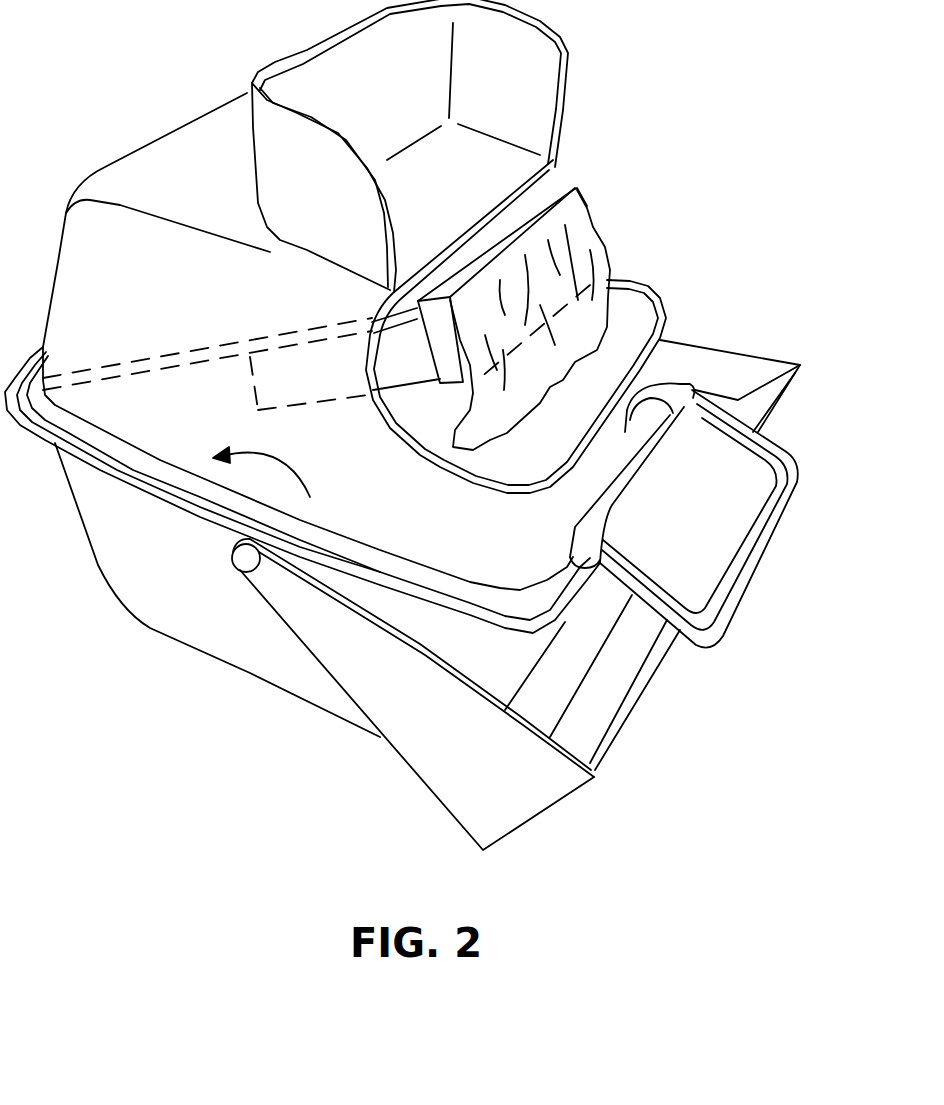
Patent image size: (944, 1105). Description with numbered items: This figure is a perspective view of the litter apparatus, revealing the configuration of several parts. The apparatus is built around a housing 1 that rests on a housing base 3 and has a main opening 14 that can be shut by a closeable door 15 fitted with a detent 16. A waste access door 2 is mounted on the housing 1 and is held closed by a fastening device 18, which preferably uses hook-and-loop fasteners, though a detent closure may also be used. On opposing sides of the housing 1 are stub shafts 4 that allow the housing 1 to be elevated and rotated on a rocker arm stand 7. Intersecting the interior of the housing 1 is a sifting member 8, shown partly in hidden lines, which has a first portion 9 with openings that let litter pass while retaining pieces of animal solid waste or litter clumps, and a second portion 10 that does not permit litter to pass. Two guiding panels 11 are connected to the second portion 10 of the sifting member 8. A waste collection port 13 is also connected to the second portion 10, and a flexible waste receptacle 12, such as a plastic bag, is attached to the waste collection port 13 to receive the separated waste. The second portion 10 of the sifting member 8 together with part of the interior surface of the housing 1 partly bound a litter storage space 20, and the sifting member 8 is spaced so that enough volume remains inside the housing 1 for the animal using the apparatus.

The housing 1 is at (173, 130).
The waste access door 2 is at (574, 66).
The housing base 3 is at (270, 683).
The stub shafts 4 is at (232, 561).
The rocker arm stand 7 is at (420, 783).
The sifting member 8 is at (238, 343).
The first portion 9 is at (133, 360).
The second portion 10 is at (187, 366).
The guiding panels 11 is at (322, 400).
The flexible waste receptacle 12 is at (608, 240).
The waste collection port 13 is at (577, 190).
The main opening 14 is at (640, 466).
The closeable door 15 is at (778, 512).
The detent 16 is at (778, 560).
The fastening device 18 is at (672, 380).
The litter storage space 20 is at (266, 258).